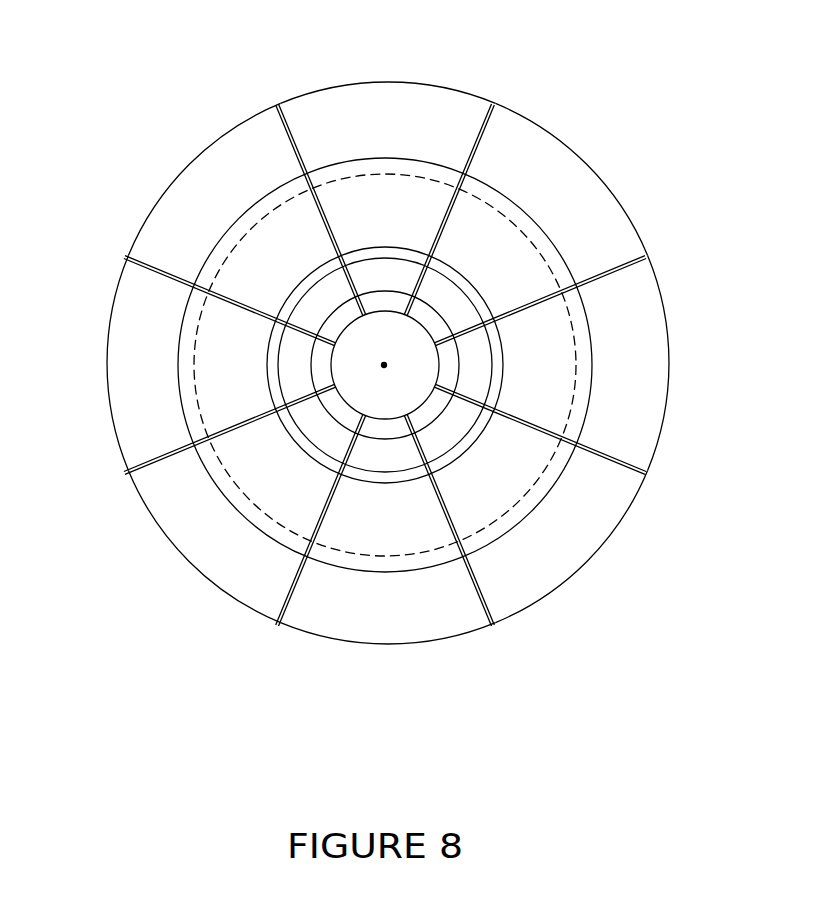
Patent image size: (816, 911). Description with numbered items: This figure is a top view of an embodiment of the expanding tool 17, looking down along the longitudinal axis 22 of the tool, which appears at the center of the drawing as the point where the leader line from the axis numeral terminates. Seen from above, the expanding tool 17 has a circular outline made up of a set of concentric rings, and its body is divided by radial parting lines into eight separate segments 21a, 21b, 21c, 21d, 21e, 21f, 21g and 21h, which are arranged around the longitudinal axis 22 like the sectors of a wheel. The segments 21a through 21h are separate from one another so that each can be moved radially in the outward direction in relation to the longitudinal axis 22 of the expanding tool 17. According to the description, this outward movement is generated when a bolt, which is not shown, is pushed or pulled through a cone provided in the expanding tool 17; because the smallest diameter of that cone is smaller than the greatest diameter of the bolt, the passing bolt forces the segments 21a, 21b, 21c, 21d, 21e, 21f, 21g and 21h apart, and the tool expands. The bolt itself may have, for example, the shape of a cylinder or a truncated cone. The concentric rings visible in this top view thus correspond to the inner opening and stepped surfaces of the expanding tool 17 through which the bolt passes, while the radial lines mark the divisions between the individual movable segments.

The expanding tool 17 is at (637, 167).
The longitudinal axis 22 is at (383, 363).
The segment 21a is at (645, 355).
The segment 21b is at (605, 503).
The segment 21c is at (390, 615).
The segment 21d is at (195, 520).
The segment 21e is at (152, 390).
The segment 21f is at (210, 200).
The segment 21g is at (393, 125).
The segment 21h is at (530, 168).